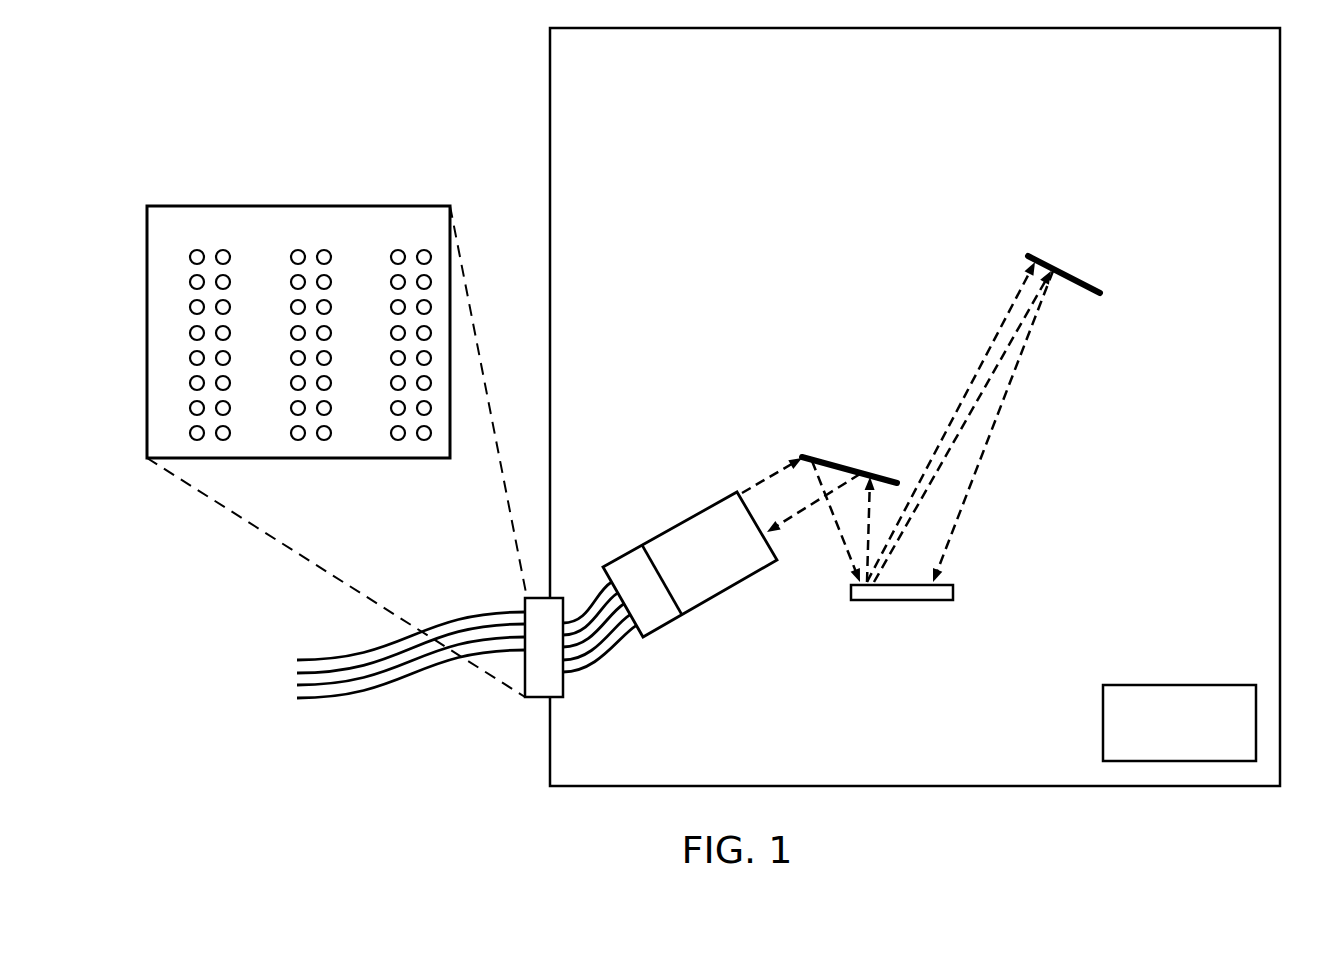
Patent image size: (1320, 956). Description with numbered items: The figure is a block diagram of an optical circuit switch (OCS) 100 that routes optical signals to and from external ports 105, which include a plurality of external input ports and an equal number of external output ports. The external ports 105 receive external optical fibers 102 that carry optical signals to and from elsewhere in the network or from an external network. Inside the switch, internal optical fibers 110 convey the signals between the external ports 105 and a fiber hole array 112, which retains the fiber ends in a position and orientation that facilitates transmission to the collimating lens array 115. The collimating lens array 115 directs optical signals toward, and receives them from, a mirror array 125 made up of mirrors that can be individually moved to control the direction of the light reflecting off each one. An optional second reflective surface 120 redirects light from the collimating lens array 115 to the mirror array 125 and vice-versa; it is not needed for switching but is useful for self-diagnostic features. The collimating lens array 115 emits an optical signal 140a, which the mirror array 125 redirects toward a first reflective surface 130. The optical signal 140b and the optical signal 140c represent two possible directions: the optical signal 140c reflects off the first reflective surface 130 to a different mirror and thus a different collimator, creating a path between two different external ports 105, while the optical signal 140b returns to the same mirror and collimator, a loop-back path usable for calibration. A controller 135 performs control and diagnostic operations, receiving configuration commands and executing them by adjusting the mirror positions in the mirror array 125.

The optical circuit switch (OCS) 100 is at (915, 407).
The external optical fibers 102 is at (318, 697).
The external ports 105 is at (223, 205).
The internal optical fibers 110 is at (625, 650).
The fiber hole array 112 is at (625, 550).
The collimating lens array 115 is at (690, 564).
The second reflective surface 120 is at (852, 456).
The mirror array 125 is at (903, 610).
The first reflective surface 130 is at (1102, 292).
The controller 135 is at (1179, 723).
The optical signal 140a is at (752, 473).
The optical signal 140b is at (1003, 307).
The optical signal 140c is at (968, 420).